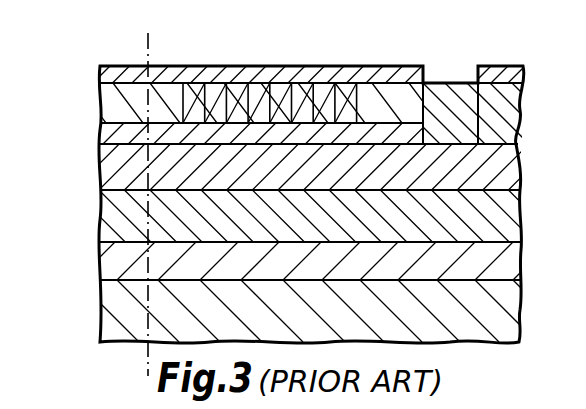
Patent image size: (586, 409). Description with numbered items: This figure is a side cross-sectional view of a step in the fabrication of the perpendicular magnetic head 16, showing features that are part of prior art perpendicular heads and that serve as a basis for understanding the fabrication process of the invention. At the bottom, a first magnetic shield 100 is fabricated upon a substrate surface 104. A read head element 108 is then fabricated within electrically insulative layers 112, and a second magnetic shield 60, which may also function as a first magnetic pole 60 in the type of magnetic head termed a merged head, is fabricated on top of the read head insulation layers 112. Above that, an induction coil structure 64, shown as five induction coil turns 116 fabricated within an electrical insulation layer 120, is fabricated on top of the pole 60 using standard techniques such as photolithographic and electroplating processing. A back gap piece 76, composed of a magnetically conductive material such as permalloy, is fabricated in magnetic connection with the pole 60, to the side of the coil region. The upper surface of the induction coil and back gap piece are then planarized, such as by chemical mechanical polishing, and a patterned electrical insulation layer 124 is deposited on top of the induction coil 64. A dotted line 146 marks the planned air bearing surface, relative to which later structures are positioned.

The perpendicular magnetic head 16 is at (77, 83).
The planned ABS surface 146 is at (150, 54).
The induction coil turns 116 is at (360, 71).
The patterned electrical insulation layer 124 is at (372, 68).
The back gap piece 76 is at (447, 98).
The electrical insulation layer 120 is at (112, 103).
The induction coil structure 64 is at (99, 116).
The second magnetic shield (S2) / first magnetic pole (P1) 60 is at (113, 162).
The electrically insulative layers 112 is at (100, 197).
The read head element 108 is at (185, 209).
The first magnetic shield (S1) 100 is at (113, 272).
The substrate surface 104 is at (100, 288).